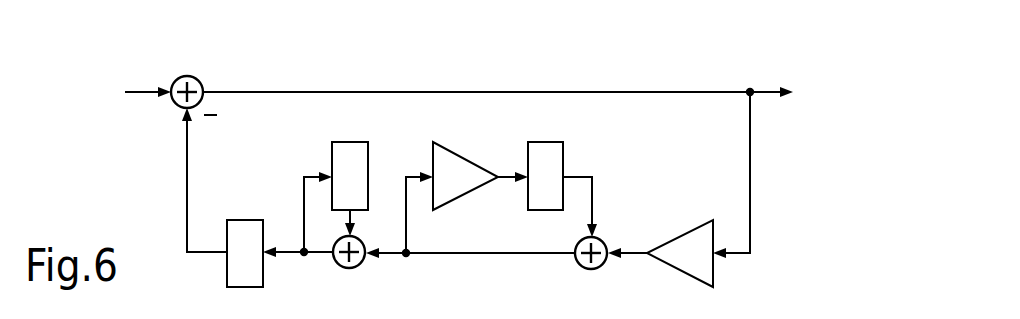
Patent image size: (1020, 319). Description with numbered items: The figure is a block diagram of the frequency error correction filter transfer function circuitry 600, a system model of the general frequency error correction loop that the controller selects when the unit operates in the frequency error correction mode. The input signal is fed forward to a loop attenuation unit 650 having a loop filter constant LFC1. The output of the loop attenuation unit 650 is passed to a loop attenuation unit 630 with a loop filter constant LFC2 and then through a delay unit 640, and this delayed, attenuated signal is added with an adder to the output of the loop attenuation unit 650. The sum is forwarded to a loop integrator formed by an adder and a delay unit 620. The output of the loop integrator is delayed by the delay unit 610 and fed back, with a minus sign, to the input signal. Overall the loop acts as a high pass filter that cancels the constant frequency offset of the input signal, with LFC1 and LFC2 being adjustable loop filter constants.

The frequency error correction filter transfer function circuitry 600 is at (671, 54).
The delay unit 610 is at (247, 220).
The delay unit 620 is at (347, 142).
The loop attenuation unit 630 is at (462, 157).
The delay unit 640 is at (543, 142).
The loop attenuation unit 650 is at (682, 235).